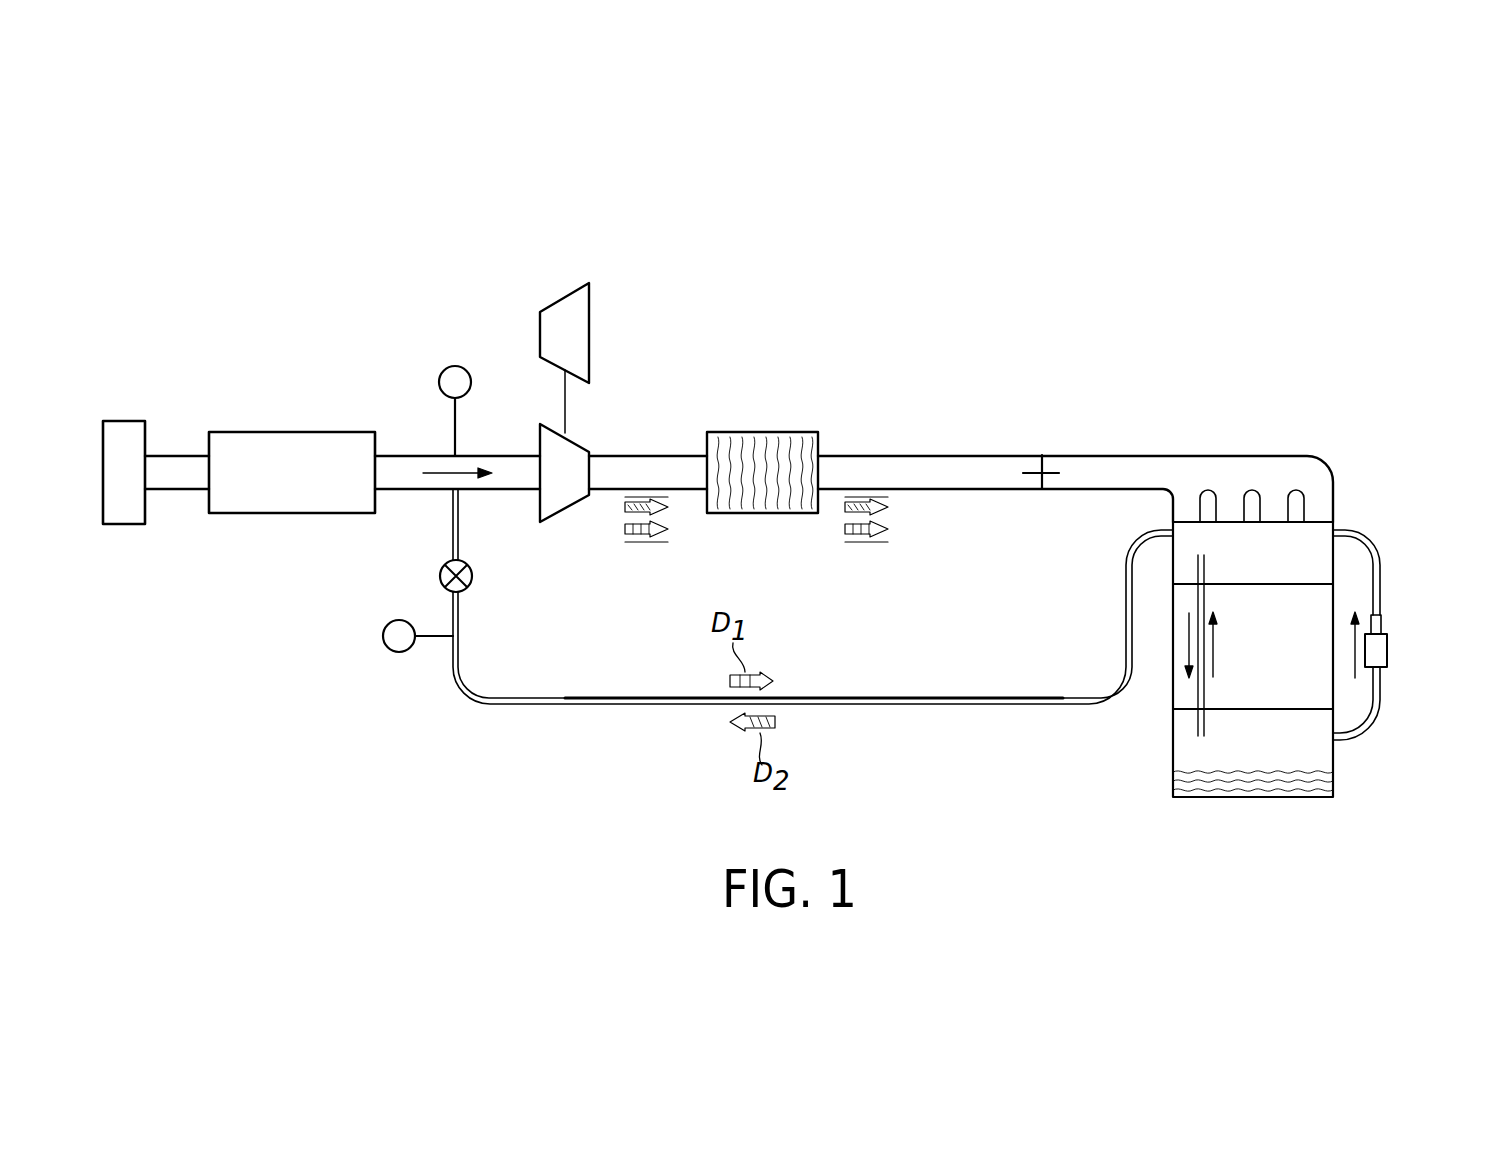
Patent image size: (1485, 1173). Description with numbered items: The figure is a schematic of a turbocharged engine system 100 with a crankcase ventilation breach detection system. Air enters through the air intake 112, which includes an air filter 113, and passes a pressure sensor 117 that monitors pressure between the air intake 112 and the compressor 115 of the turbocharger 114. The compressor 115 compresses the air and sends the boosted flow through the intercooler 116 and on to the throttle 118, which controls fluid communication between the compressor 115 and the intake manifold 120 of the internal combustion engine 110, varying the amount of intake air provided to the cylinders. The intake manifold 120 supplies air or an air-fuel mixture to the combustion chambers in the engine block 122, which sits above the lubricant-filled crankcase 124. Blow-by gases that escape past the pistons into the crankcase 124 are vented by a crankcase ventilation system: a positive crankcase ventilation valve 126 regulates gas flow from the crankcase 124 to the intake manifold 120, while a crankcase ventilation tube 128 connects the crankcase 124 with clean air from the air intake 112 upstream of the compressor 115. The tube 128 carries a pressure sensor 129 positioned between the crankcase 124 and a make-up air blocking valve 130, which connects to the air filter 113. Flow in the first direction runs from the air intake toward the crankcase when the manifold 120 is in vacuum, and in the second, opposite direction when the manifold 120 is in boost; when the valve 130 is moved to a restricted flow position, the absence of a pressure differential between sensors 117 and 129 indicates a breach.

The engine system 100 is at (1094, 228).
The internal combustion engine 110 is at (1325, 435).
The air intake 112 is at (125, 421).
The air filter 113 is at (290, 432).
The turbocharger 114 is at (560, 297).
The compressor 115 is at (568, 510).
The intercooler 116 is at (753, 430).
The pressure sensor 117 is at (448, 367).
The throttle 118 is at (1045, 470).
The intake manifold 120 is at (1335, 497).
The engine block 122 is at (1172, 682).
The crankcase 124 is at (1333, 772).
The positive crankcase ventilation valve 126 is at (1388, 652).
The crankcase ventilation tube 128 is at (1125, 618).
The pressure sensor 129 is at (382, 636).
The make-up air blocking valve 130 is at (440, 573).